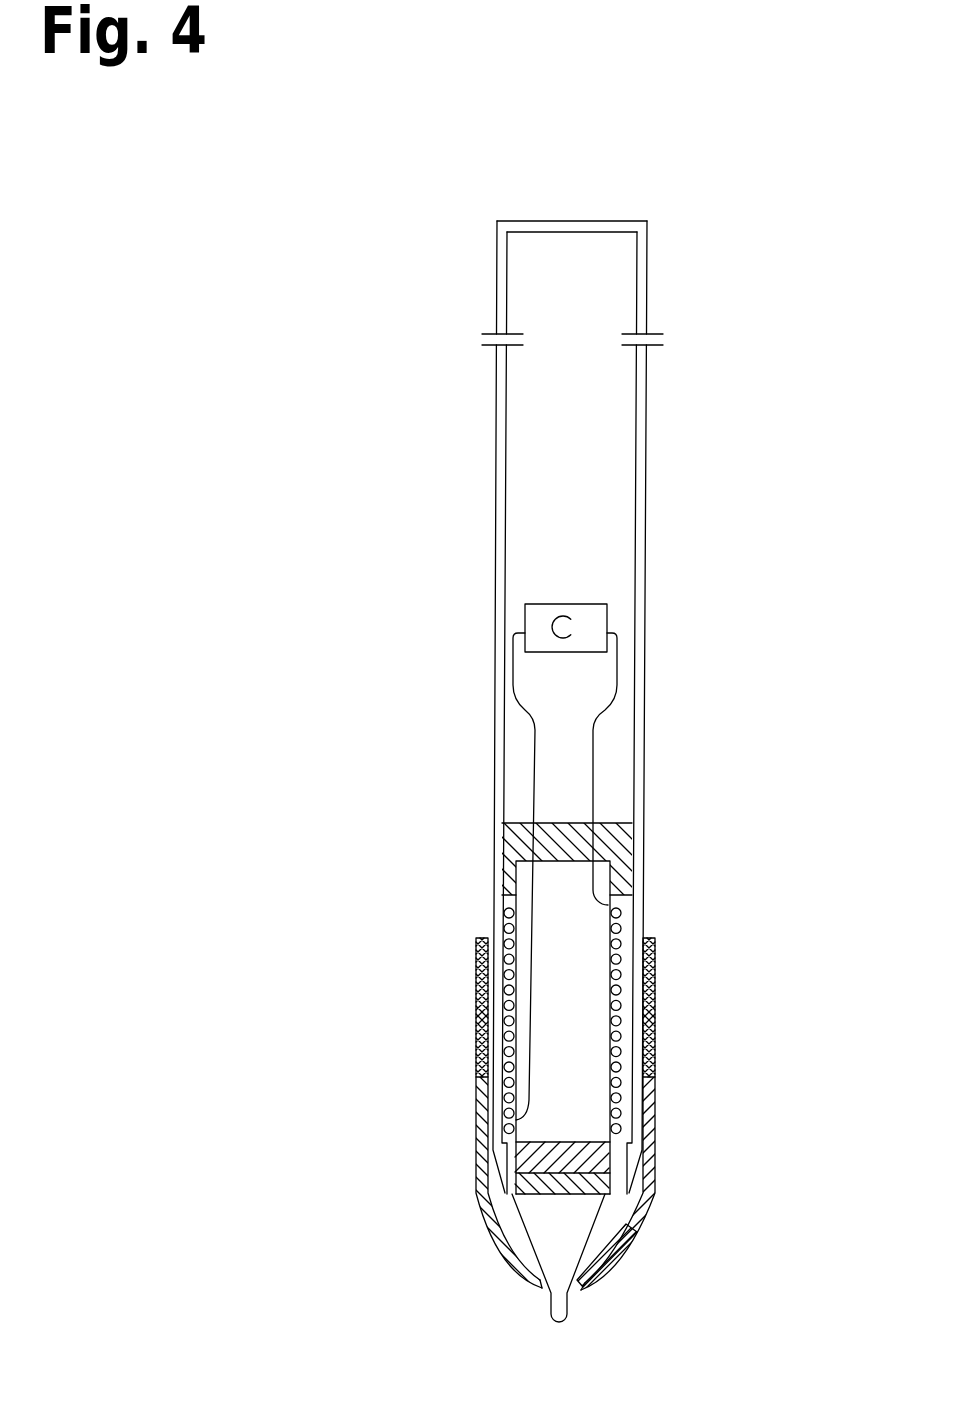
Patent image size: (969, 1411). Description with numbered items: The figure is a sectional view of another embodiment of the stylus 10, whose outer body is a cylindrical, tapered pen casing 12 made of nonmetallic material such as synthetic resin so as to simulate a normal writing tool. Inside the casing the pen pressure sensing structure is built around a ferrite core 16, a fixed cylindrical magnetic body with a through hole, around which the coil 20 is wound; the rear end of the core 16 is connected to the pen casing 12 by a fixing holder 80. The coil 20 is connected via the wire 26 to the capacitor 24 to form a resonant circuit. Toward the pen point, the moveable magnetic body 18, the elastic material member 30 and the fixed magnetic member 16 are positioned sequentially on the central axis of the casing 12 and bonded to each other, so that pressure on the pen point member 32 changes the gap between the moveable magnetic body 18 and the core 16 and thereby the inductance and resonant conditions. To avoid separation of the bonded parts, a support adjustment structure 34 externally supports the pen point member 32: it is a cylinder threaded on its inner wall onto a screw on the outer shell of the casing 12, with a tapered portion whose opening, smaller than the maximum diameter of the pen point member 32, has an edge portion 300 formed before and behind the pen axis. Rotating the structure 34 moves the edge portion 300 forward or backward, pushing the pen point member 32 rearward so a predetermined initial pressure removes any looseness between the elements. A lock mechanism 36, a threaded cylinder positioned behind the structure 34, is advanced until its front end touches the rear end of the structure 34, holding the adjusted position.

The stylus 10 is at (768, 308).
The pen casing 12 is at (497, 405).
The capacitor 24 is at (587, 622).
The wire 26 is at (535, 713).
The fixing holder 80 is at (613, 837).
The ferrite core 16 is at (575, 1028).
The coil 20 is at (615, 930).
The lock mechanism 36 is at (478, 1005).
The support adjustment structure 34 is at (478, 1170).
The elastic material member 30 is at (590, 1168).
The moveable magnetic body 18 is at (580, 1197).
The pen point member 32 is at (577, 1227).
The edge portion 300 is at (540, 1286).